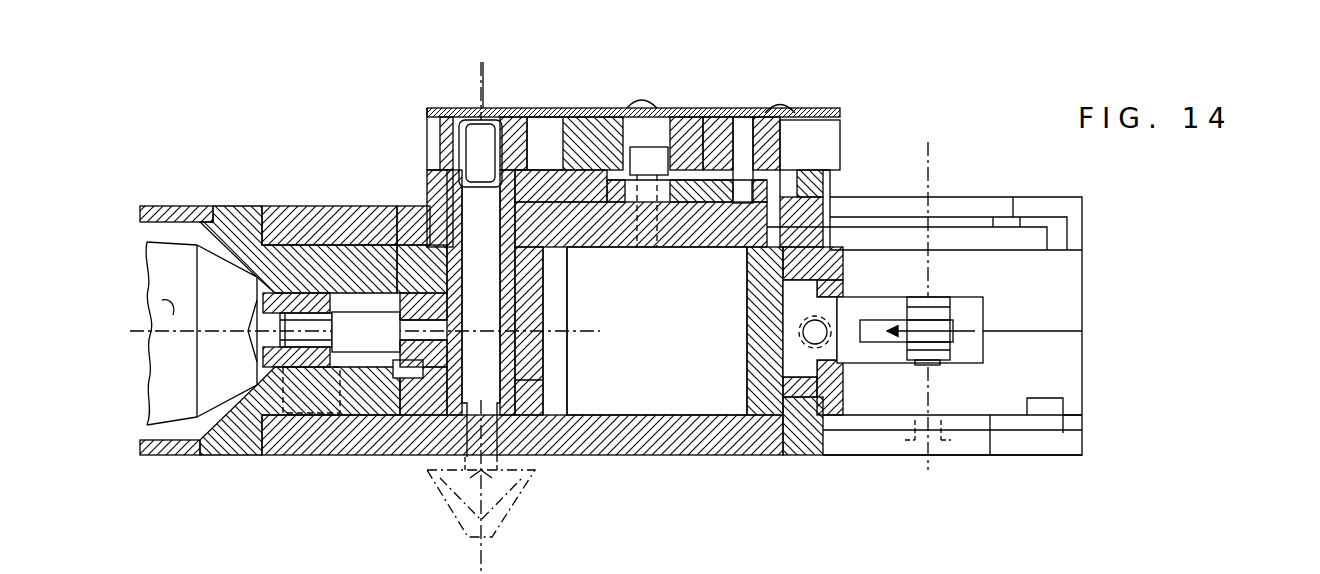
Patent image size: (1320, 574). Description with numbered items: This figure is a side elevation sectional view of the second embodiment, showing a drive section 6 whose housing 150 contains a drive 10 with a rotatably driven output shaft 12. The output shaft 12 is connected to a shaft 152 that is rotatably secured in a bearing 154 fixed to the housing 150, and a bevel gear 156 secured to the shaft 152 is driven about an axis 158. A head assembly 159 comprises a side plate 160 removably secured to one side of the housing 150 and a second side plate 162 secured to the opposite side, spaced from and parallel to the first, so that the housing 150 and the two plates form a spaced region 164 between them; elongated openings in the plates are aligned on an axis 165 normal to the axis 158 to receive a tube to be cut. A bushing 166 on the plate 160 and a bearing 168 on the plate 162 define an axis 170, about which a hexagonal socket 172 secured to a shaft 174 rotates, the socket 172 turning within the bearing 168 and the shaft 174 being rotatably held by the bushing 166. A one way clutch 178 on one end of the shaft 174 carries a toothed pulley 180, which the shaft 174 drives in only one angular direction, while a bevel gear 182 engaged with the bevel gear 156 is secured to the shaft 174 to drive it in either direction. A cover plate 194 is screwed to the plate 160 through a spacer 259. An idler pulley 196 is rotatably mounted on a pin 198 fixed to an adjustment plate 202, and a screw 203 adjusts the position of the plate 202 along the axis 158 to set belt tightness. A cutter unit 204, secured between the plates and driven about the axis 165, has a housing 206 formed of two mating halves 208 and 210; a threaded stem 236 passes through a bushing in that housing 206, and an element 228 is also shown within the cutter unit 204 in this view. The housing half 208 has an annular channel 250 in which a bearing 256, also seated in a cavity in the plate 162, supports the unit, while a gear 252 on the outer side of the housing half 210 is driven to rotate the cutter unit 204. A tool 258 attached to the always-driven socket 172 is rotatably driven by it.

The drive section 6 is at (182, 470).
The drive 10 is at (185, 404).
The output shaft 12 is at (262, 415).
The housing 150 is at (233, 222).
The shaft 152 is at (330, 400).
The bearing 154 is at (382, 342).
The bevel gear 156 is at (395, 206).
The axis 158 is at (165, 312).
The head assembly 159 is at (935, 136).
The side plate 160 is at (612, 215).
The second side plate 162 is at (722, 440).
The spaced region 164 is at (678, 346).
The axis 165 is at (930, 290).
The bushing 166 is at (553, 97).
The bearing 168 is at (553, 440).
The axis 170 is at (483, 88).
The hexagonal socket 172 is at (540, 470).
The shaft 174 is at (490, 343).
The one way clutch 178 is at (503, 110).
The toothed pulley 180 is at (450, 108).
The bevel gear 182 is at (403, 275).
The cover plate 194 is at (490, 108).
The idler pulley 196 is at (790, 155).
The pin 198 is at (748, 108).
The adjustment plate 202 is at (612, 207).
The screw 203 is at (650, 150).
The cutter unit 204 is at (1100, 356).
The housing 206 is at (744, 362).
The housing half 208 is at (1082, 398).
The housing half 210 is at (1080, 312).
The spool valve 228 is at (953, 328).
The threaded stem 236 is at (840, 300).
The annular channel 250 is at (1050, 400).
The gear 252 is at (968, 215).
The bearing 256 is at (802, 420).
The tool 258 is at (467, 510).
The spacer 259 is at (742, 128).